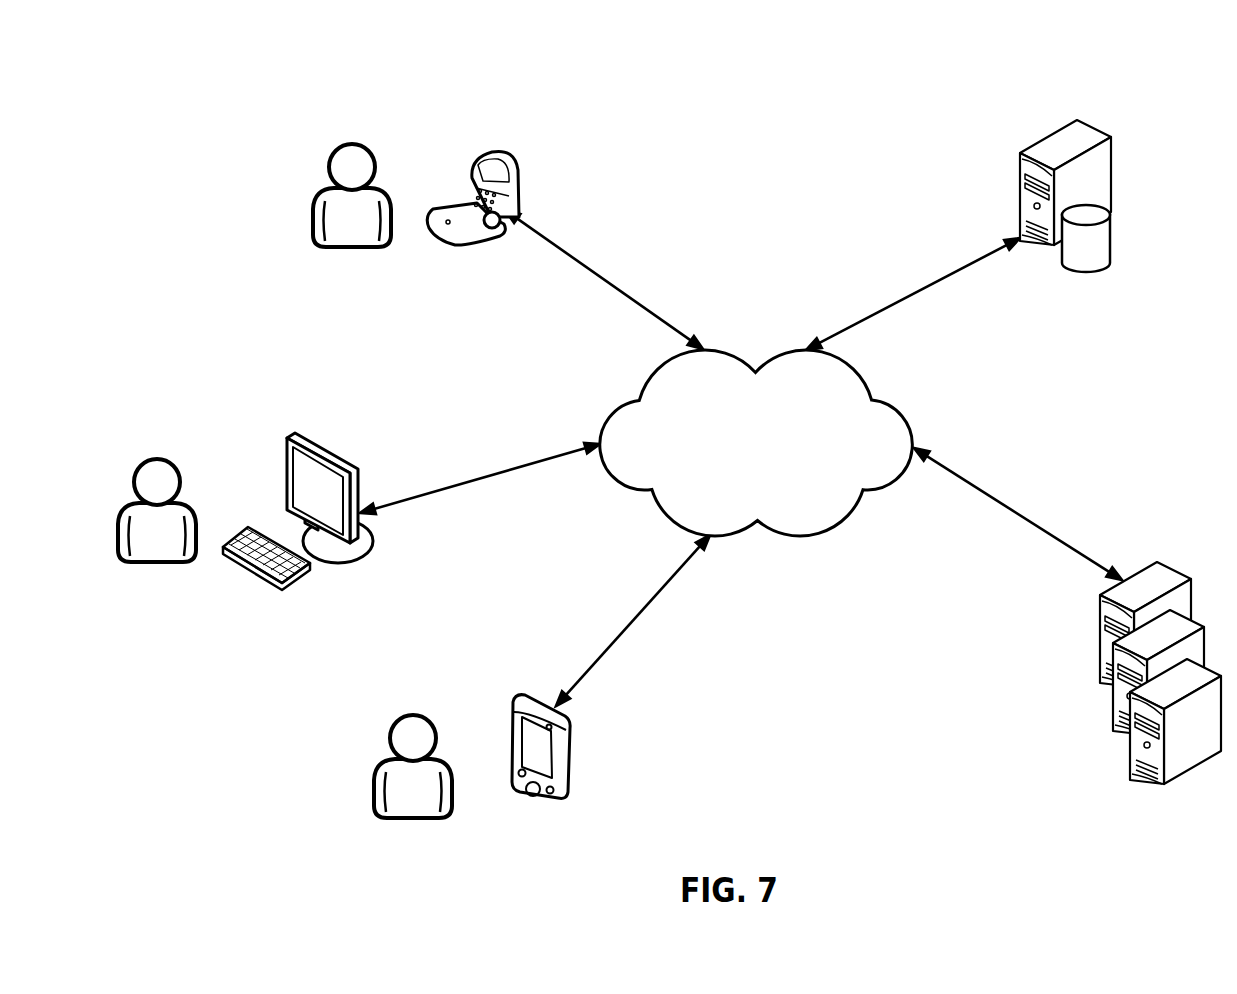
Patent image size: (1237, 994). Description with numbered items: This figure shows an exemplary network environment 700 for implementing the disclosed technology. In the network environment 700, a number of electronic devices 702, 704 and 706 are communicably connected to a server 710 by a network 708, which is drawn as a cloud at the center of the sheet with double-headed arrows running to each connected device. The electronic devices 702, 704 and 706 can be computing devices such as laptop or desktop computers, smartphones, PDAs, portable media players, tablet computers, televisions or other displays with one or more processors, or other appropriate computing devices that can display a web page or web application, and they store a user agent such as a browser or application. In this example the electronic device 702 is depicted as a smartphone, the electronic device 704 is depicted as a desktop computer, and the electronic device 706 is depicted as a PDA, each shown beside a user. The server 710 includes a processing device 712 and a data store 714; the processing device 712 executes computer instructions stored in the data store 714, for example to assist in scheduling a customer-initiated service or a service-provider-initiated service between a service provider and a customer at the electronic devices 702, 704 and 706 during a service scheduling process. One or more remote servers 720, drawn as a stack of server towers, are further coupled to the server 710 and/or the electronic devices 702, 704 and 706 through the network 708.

The network environment 700 is at (193, 126).
The electronic device 702 is at (497, 168).
The electronic device 704 is at (332, 440).
The electronic device 706 is at (576, 775).
The network 708 is at (756, 443).
The server 710 is at (1040, 286).
The processing device 712 is at (1053, 130).
The data store 714 is at (1098, 258).
The remote servers 720 is at (1085, 714).